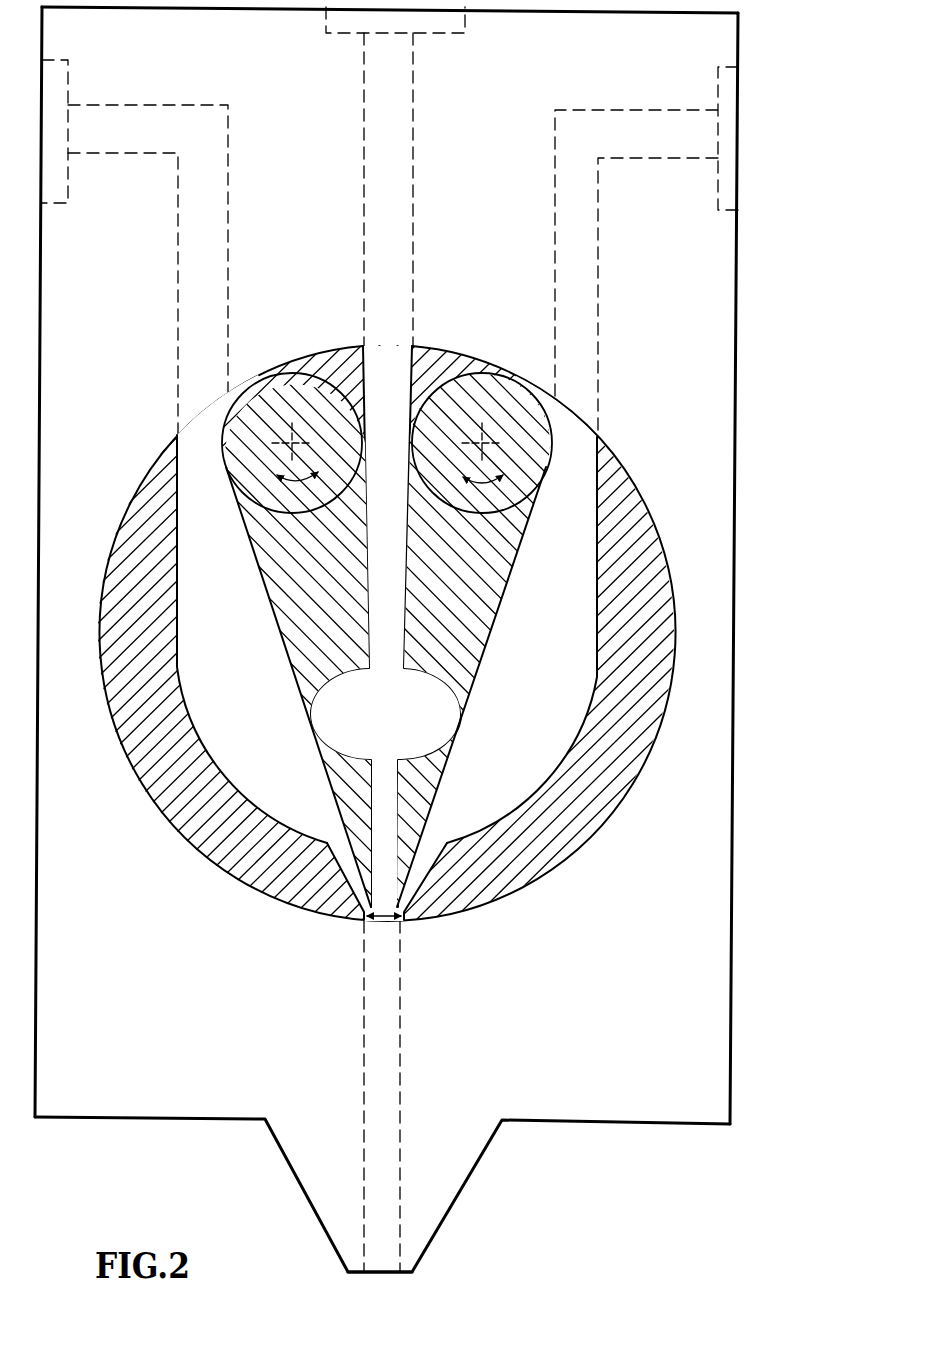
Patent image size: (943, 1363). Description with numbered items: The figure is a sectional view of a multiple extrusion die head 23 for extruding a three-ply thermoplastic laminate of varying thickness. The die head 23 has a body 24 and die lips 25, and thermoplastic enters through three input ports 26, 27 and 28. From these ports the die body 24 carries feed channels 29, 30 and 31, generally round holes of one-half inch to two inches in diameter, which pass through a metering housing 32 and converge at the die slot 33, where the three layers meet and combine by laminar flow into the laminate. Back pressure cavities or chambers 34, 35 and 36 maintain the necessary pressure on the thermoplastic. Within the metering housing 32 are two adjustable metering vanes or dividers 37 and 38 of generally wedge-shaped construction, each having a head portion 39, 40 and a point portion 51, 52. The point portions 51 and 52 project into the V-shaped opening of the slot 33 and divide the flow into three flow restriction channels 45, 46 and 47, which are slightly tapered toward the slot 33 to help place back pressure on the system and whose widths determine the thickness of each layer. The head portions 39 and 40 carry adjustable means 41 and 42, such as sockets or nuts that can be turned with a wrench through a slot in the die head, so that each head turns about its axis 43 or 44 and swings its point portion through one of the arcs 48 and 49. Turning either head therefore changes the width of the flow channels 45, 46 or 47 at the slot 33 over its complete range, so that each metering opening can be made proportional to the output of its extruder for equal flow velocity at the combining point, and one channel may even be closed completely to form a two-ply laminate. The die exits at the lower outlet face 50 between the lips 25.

The die head 23 is at (578, 1128).
The body 24 is at (96, 259).
The die lips 25 is at (197, 1095).
The thermoplastic input port 26 is at (70, 68).
The thermoplastic input port 27 is at (466, 30).
The thermoplastic input port 28 is at (718, 75).
The feed channel 29 is at (181, 183).
The feed channel 30 is at (366, 184).
The feed channel 31 is at (599, 200).
The metering housing 32 is at (663, 668).
The die slot 33 is at (388, 932).
The back pressure chamber 34 is at (227, 709).
The back pressure chamber 35 is at (375, 714).
The back pressure chamber 36 is at (508, 709).
The adjustable metering vane 37 is at (272, 586).
The adjustable metering vane 38 is at (492, 576).
The head portion 39 is at (290, 376).
The head portion 40 is at (494, 378).
The adjustable means 41 is at (289, 438).
The adjustable means 42 is at (488, 442).
The axis 43 is at (307, 482).
The axis 44 is at (493, 481).
The flow restriction channel 45 is at (413, 903).
The flow restriction channel 46 is at (382, 928).
The flow restriction channel 47 is at (360, 903).
The arc 48 is at (372, 912).
The arc 49 is at (397, 912).
The die outlet face 50 is at (384, 1273).
The point portion 51 is at (350, 893).
The point portion 52 is at (405, 897).